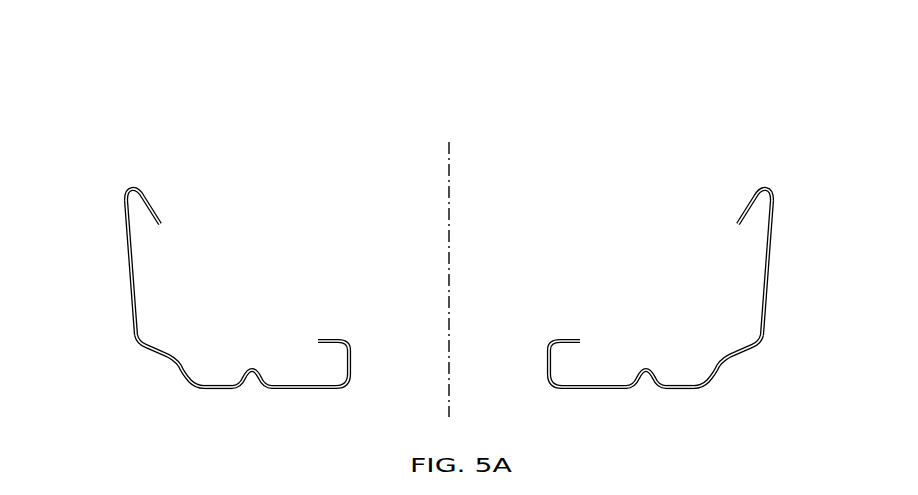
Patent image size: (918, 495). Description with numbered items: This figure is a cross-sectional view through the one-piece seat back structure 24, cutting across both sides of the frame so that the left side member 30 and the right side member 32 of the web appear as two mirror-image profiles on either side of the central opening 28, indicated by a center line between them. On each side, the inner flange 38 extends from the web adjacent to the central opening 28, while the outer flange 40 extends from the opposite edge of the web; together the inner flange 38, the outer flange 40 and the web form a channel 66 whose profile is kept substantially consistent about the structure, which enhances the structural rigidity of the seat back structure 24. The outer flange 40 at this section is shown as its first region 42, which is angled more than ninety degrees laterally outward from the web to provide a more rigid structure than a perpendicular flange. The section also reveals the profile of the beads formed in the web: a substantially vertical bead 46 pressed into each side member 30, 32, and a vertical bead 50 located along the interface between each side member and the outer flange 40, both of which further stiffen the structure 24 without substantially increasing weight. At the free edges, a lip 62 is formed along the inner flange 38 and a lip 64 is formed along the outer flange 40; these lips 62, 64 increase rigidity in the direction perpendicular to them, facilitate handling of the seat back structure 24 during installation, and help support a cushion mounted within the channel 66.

The seat back structure 24 is at (438, 112).
The central opening 28 is at (497, 267).
The left side member 30 is at (685, 387).
The right side member 32 is at (215, 387).
The inner flange 38 is at (350, 360).
The outer flange 40 is at (75, 280).
The first region 42 is at (127, 253).
The vertical bead 46 is at (255, 370).
The vertical bead 50 is at (173, 357).
The lip 62 is at (335, 338).
The lip 64 is at (133, 187).
The channel 66 is at (278, 247).